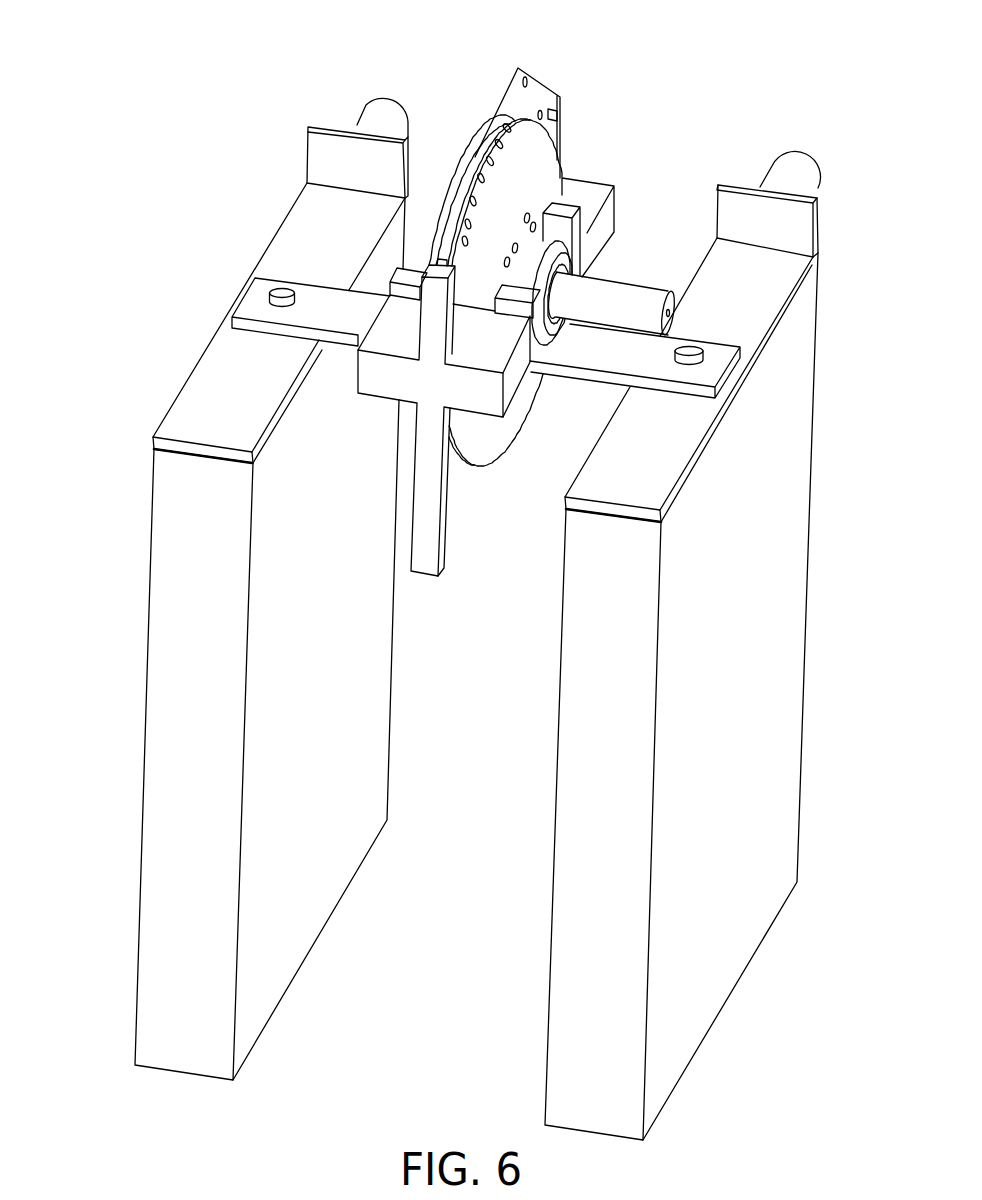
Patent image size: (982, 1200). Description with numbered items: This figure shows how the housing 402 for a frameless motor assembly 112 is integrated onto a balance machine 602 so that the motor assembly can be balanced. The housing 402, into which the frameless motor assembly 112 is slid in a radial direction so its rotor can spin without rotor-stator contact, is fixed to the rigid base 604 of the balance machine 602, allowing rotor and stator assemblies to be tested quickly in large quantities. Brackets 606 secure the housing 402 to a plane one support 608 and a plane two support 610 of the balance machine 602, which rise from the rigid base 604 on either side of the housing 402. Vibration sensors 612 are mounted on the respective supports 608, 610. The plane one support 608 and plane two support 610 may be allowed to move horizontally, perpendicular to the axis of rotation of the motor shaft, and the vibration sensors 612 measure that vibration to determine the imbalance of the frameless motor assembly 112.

The frameless motor assembly 112 is at (580, 114).
The housing 402 is at (380, 320).
The balance machine 602 is at (118, 703).
The rigid base 604 is at (804, 690).
The brackets 606 is at (310, 308).
The plane 1 support 608 is at (170, 410).
The plane 2 support 610 is at (818, 318).
The vibration sensors 612 is at (385, 93).